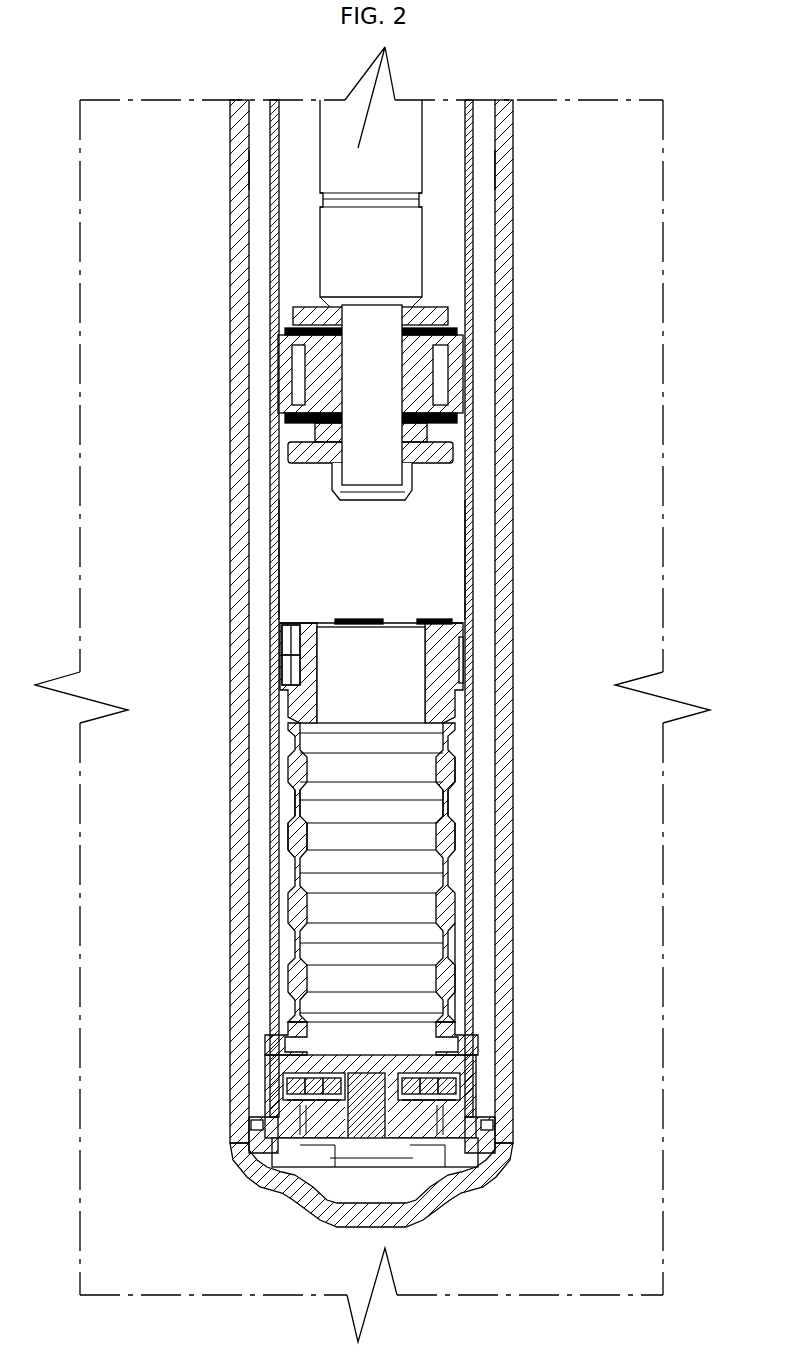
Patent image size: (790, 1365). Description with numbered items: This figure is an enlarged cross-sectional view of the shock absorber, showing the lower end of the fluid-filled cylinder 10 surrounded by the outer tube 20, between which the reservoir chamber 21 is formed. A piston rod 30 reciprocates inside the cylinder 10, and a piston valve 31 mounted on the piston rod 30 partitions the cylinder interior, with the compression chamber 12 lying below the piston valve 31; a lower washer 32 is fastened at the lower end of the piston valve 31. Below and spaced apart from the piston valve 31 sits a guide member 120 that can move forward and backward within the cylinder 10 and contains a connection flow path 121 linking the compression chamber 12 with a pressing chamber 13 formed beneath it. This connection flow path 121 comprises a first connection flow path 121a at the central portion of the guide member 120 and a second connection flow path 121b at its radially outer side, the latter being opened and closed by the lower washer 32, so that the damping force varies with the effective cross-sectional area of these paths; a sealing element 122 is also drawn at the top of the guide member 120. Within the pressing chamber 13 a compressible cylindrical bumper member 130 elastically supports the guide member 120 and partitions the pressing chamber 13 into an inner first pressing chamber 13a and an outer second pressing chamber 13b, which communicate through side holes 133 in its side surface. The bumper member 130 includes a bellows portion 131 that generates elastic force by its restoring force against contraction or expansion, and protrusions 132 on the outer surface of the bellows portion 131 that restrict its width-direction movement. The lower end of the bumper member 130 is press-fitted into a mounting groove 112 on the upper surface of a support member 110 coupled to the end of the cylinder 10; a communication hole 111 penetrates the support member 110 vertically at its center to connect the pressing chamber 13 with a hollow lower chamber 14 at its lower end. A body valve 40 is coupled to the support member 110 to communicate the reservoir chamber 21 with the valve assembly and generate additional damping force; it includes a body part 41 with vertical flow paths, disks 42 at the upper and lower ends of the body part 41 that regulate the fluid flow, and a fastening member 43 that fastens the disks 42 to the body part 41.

The outer tube 20 is at (236, 126).
The reservoir chamber 21 is at (260, 172).
The cylinder 10 is at (275, 208).
The piston rod 30 is at (340, 252).
The piston valve 31 is at (283, 358).
The lower washer 32 is at (290, 452).
The compression chamber 12 is at (300, 522).
The sealing member 122 is at (422, 623).
The connection flow path 121 is at (145, 636).
The first connection flow path 121a is at (333, 680).
The second connection flow path 121b is at (285, 645).
The guide member 120 is at (450, 657).
The pressing chamber 13 is at (150, 790).
The first pressing chamber 13a is at (320, 777).
The second pressing chamber 13b is at (282, 830).
The side hole 133 is at (453, 800).
The bumper member 130 is at (448, 835).
The bellows portion 131 is at (450, 947).
The protrusion 132 is at (450, 983).
The communication hole 111 is at (340, 1047).
The mounting groove 112 is at (447, 1056).
The lower chamber 14 is at (283, 1082).
The support member 110 is at (462, 1067).
The body valve 40 is at (275, 1120).
The body part 41 is at (467, 1125).
The disk 42 is at (293, 1120).
The fastening member 43 is at (385, 1157).